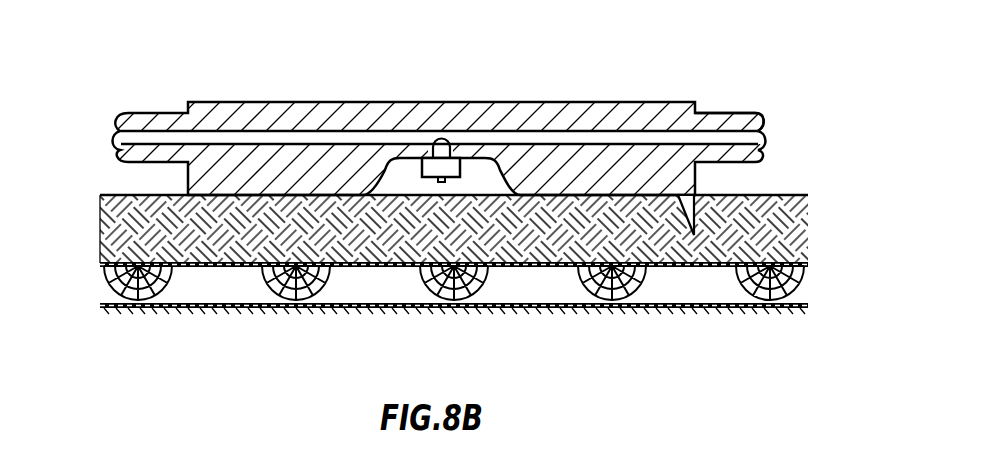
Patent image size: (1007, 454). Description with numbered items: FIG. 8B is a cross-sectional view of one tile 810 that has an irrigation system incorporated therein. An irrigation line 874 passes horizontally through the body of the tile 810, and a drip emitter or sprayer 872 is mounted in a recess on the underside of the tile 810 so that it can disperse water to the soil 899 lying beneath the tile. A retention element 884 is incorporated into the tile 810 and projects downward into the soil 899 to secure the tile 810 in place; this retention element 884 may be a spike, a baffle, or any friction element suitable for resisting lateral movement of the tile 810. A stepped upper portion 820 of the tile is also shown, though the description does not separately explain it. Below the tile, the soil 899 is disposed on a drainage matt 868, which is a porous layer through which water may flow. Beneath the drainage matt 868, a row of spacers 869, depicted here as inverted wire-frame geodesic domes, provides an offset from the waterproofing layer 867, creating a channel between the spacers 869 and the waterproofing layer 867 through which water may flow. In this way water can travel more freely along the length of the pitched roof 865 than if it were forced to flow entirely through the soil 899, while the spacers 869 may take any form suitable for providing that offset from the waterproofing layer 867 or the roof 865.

The tile 810 is at (612, 101).
The upper flange 820 is at (728, 112).
The drip emitter or sprayer 872 is at (420, 167).
The irrigation line 874 is at (747, 138).
The retention element 884 is at (695, 220).
The drainage matt 868 is at (803, 233).
The waterproofing layer 867 is at (806, 302).
The spacers 869 is at (115, 292).
The pitched roof 865 is at (806, 305).
The soil 899 is at (133, 194).